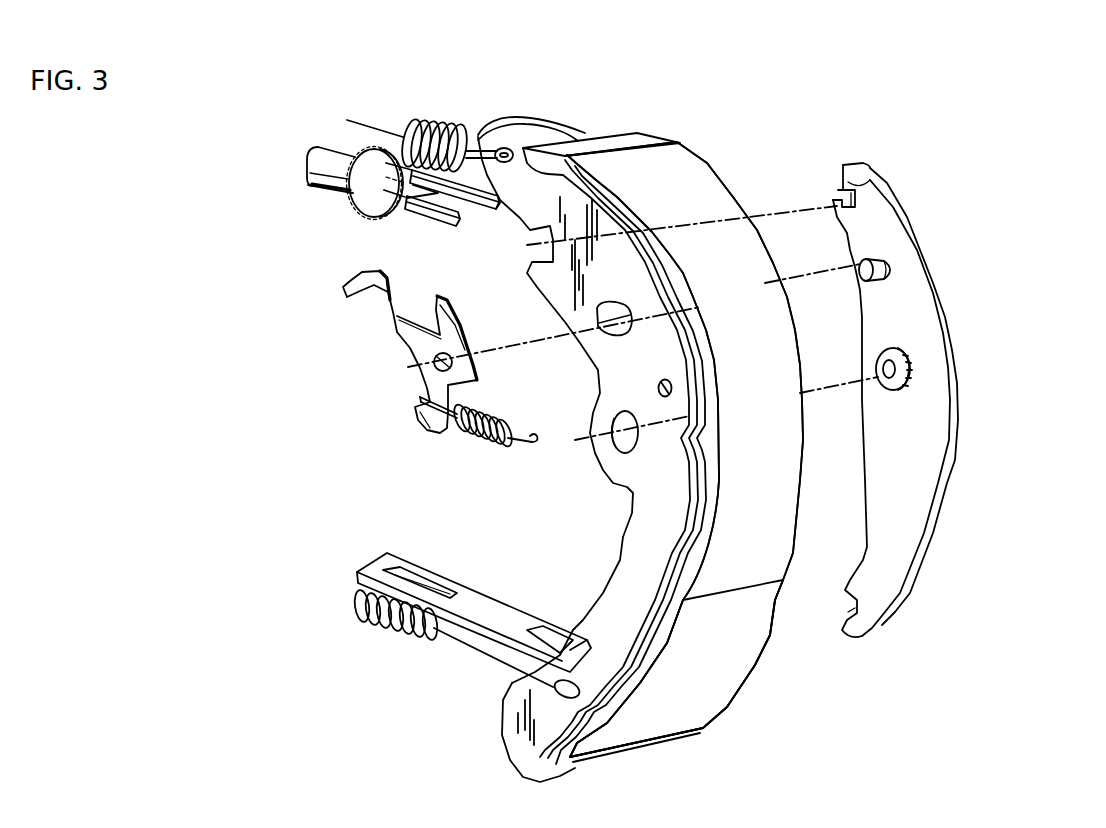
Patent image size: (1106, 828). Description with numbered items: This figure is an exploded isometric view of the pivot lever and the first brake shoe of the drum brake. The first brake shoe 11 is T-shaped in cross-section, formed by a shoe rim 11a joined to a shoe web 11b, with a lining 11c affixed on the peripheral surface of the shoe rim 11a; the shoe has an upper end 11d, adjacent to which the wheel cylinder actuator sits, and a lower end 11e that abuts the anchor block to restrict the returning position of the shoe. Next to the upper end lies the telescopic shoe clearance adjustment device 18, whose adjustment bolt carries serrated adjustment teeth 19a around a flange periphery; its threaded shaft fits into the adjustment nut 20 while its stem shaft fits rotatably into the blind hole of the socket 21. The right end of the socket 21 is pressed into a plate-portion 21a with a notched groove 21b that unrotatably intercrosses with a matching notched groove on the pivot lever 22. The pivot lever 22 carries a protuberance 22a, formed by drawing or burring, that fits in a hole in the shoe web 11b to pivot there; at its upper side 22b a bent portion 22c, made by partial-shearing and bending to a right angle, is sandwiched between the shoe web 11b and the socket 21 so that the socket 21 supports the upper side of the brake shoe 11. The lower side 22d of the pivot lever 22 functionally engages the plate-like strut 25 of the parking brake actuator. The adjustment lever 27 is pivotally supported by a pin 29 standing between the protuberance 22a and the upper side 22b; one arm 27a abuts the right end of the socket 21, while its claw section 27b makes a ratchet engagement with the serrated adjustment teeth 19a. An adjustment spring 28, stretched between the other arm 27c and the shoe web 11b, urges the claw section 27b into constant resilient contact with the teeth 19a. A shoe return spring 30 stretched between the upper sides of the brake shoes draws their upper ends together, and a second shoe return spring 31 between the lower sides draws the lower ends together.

The first brake shoe 11 is at (643, 412).
The shoe rim 11a is at (620, 142).
The shoe web 11b is at (608, 480).
The lining 11c is at (695, 170).
The upper end of the brake shoe 11d is at (520, 130).
The lower end of the brake shoe 11e is at (525, 768).
The shoe clearance adjustment device 18 is at (320, 150).
The serrated adjustment teeth 19a is at (353, 208).
The adjustment nut 20 is at (318, 190).
The socket 21 is at (451, 220).
The plate-portion 21a is at (427, 212).
The notched groove 21b is at (477, 218).
The pivot lever 22 is at (907, 391).
The protuberance 22a is at (915, 373).
The upper side of the pivot lever 22b is at (870, 180).
The bent portion 22c is at (838, 196).
The lower side of the pivot lever 22d is at (885, 606).
The strut 25 is at (447, 583).
The adjustment lever 27 is at (395, 373).
The arm 27a is at (447, 306).
The claw section 27b is at (343, 292).
The other arm 27c is at (430, 432).
The adjustment spring 28 is at (480, 446).
The pin 29 is at (860, 266).
The shoe return spring 30 is at (446, 120).
The shoe return spring 31 is at (385, 632).